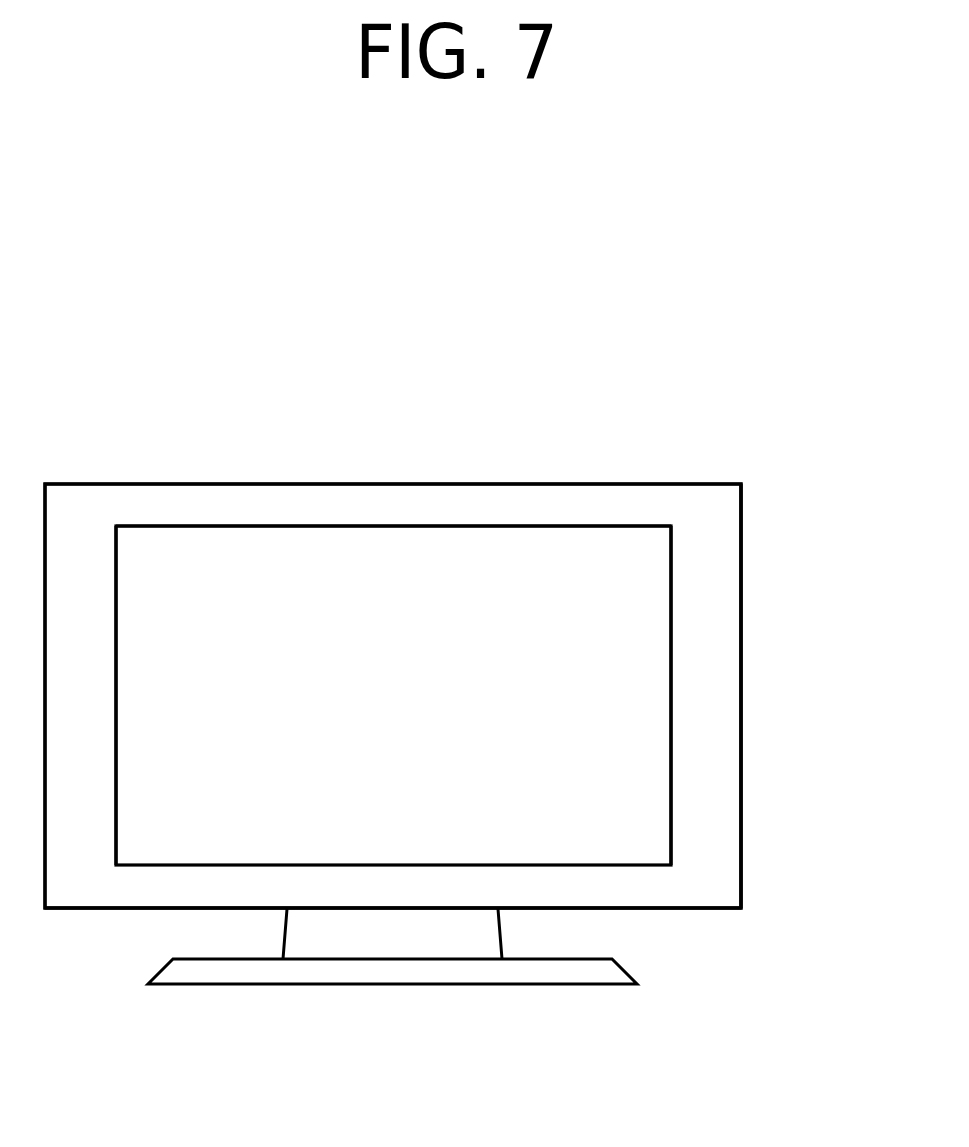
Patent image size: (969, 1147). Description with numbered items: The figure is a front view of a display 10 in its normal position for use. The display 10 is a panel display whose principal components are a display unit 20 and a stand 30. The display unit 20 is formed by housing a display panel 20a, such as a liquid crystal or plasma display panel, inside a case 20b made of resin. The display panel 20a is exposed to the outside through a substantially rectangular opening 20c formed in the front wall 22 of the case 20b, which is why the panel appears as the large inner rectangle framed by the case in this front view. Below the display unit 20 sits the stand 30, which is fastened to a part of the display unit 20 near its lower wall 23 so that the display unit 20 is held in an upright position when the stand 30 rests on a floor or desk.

The display 10 is at (757, 437).
The display unit 20 is at (621, 485).
The display panel 20a is at (642, 593).
The case 20b is at (698, 673).
The opening 20c is at (118, 587).
The front wall 22 is at (432, 512).
The lower wall 23 is at (665, 909).
The stand 30 is at (338, 947).